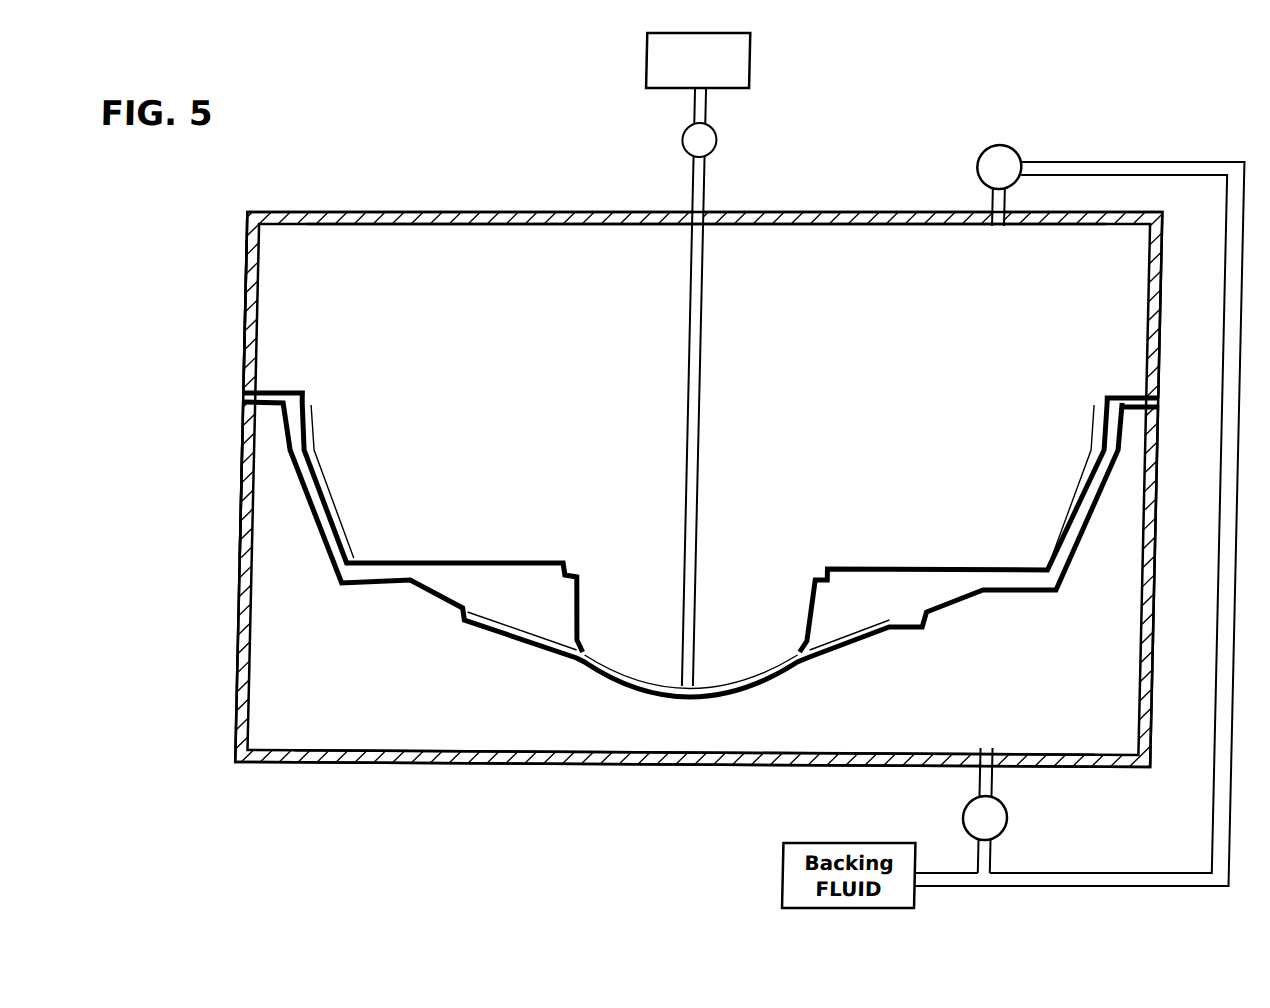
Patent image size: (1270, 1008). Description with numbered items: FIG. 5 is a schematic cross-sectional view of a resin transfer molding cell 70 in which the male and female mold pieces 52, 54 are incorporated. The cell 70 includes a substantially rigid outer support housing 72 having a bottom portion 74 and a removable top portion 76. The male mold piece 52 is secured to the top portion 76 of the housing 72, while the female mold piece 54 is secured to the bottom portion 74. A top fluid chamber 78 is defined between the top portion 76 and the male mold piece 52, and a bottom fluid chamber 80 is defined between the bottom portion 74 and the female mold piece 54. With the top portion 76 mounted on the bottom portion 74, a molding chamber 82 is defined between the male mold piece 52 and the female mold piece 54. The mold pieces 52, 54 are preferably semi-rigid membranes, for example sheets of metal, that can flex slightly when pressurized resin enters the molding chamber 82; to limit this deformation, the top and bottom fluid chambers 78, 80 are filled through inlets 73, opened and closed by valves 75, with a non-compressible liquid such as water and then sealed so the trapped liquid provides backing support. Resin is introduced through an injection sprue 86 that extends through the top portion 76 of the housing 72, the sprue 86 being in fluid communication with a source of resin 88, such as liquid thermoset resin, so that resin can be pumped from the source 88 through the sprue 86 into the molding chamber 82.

The molding cell 70 is at (152, 216).
The outer support housing 72 is at (240, 718).
The bottom portion 74 is at (241, 480).
The top portion 76 is at (243, 320).
The top fluid chamber 78 is at (553, 243).
The bottom fluid chamber 80 is at (525, 738).
The male mold piece 52 is at (449, 562).
The female mold piece 54 is at (430, 590).
The molding chamber 82 is at (530, 600).
The injection sprue 86 is at (698, 195).
The source of resin 88 is at (740, 52).
The inlets 73 is at (980, 199).
The valves 75 is at (1003, 147).